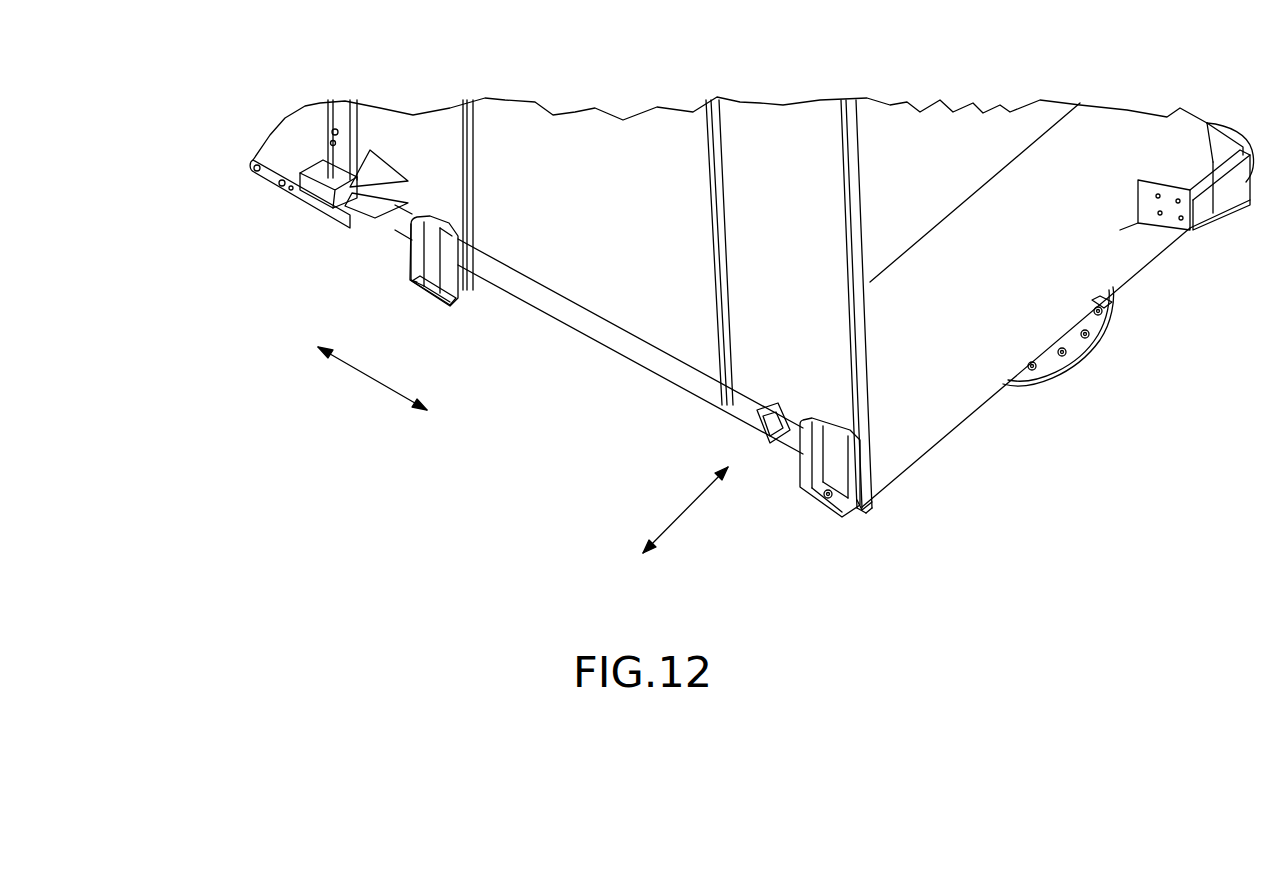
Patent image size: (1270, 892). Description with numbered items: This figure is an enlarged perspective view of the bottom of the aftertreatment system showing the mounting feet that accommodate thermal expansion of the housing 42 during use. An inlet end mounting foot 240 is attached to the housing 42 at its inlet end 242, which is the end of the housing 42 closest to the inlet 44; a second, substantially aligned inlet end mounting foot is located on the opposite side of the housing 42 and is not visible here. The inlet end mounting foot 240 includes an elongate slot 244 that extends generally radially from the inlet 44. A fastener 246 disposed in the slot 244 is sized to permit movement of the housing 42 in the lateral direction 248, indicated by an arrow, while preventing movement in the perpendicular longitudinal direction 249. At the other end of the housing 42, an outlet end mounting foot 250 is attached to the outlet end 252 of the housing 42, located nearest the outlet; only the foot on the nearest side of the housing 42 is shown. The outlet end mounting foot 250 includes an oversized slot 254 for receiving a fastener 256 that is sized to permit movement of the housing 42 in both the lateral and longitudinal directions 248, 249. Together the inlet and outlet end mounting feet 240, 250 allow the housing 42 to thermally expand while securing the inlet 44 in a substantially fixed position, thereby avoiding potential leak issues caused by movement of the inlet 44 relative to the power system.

The housing 42 is at (613, 280).
The inlet 44 is at (1082, 348).
The inlet end mounting foot 240 is at (862, 500).
The inlet end 242 is at (925, 385).
The elongate slot 244 is at (832, 500).
The fastener 246 is at (800, 488).
The lateral direction 248 is at (683, 510).
The longitudinal direction 249 is at (372, 378).
The outlet end mounting foot 250 is at (462, 272).
The outlet end 252 is at (310, 150).
The oversized slot 254 is at (445, 308).
The fastener 256 is at (427, 280).